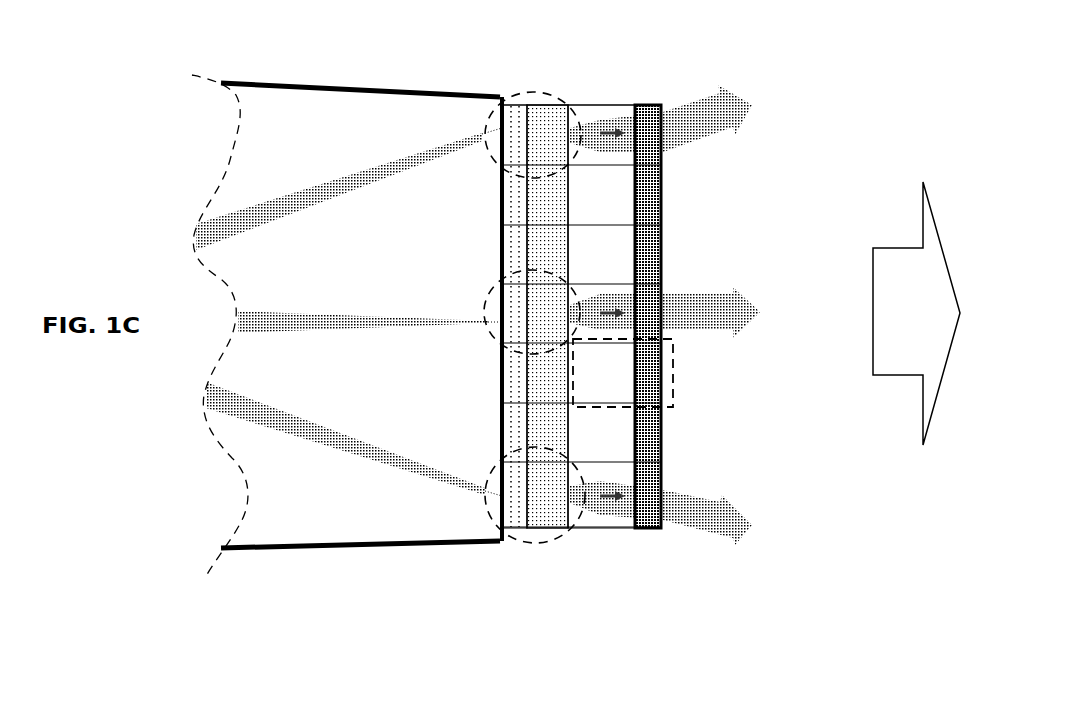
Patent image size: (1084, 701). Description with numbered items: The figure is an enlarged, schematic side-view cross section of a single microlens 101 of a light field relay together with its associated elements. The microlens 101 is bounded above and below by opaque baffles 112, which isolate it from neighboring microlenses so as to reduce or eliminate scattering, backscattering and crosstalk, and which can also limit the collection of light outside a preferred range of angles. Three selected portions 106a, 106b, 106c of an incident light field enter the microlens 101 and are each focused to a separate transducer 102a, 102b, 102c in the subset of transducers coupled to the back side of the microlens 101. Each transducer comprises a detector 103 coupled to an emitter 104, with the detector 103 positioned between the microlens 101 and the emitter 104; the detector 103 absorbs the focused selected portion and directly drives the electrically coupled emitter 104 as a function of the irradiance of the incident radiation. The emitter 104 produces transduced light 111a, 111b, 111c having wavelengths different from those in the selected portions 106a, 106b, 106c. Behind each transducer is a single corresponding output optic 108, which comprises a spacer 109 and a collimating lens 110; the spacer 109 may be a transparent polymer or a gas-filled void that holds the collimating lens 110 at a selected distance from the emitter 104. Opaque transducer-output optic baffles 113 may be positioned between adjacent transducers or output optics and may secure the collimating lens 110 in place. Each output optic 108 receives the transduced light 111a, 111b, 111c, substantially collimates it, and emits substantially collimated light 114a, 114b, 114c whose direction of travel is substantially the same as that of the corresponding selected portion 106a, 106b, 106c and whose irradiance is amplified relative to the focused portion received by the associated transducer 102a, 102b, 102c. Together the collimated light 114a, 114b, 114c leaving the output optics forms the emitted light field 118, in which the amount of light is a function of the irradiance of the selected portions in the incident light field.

The microlens 101 is at (350, 122).
The opaque baffle 112 is at (258, 83).
The transducer 102a is at (532, 93).
The transducer 102b is at (495, 330).
The transducer 102c is at (508, 548).
The detector 103 is at (503, 192).
The emitter 104 is at (558, 207).
The spacer 109 is at (625, 208).
The collimating lens 110 is at (653, 185).
The transducer-output optic baffle 113 is at (650, 464).
The output optic 108 is at (678, 368).
The selected portion of incident light field 106a is at (338, 206).
The selected portion of incident light field 106b is at (368, 338).
The selected portion of incident light field 106c is at (344, 456).
The transduced light 111a is at (590, 116).
The transduced light 111b is at (605, 300).
The transduced light 111c is at (604, 516).
The substantially collimated light 114a is at (705, 100).
The substantially collimated light 114b is at (720, 322).
The substantially collimated light 114c is at (712, 540).
The emitted light field 118 is at (935, 330).